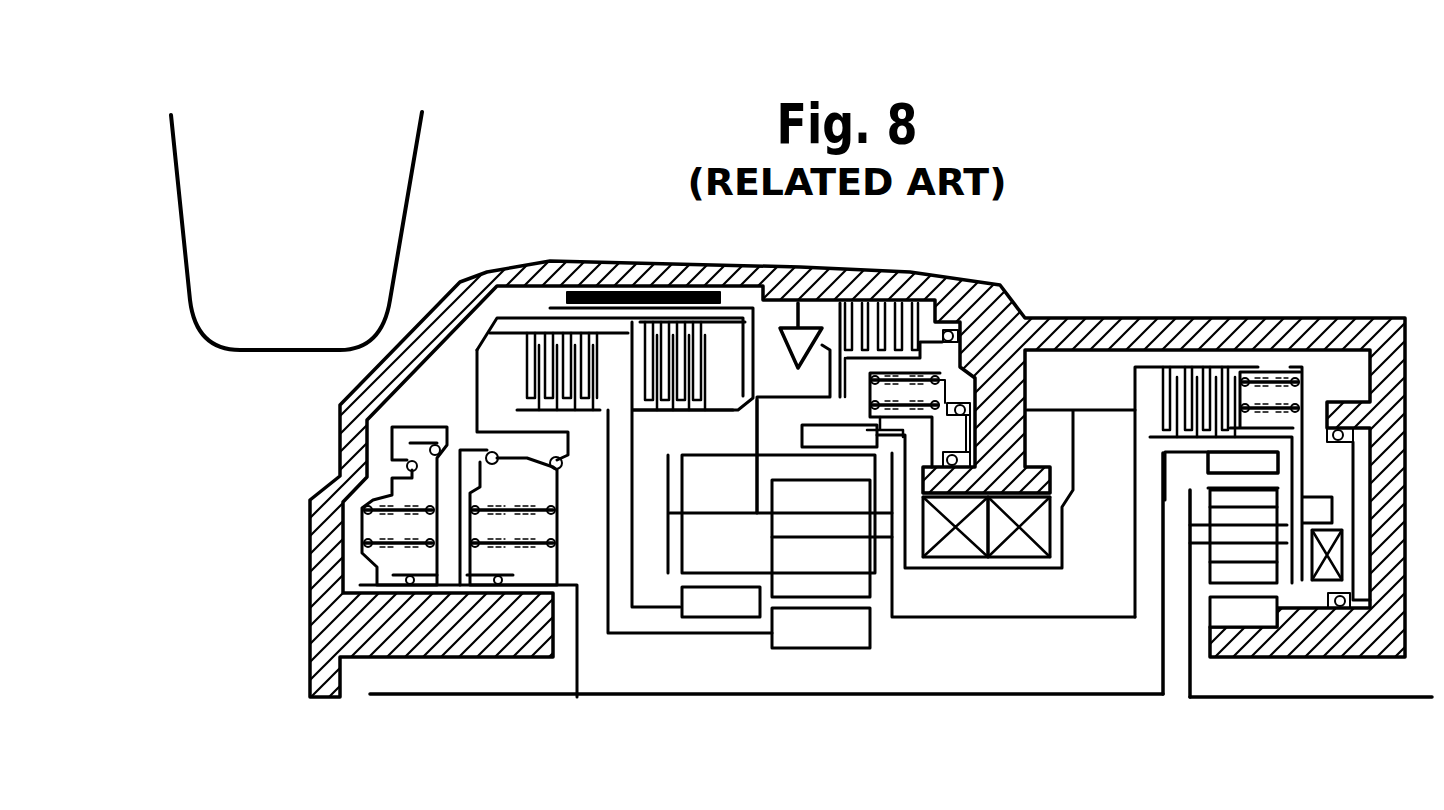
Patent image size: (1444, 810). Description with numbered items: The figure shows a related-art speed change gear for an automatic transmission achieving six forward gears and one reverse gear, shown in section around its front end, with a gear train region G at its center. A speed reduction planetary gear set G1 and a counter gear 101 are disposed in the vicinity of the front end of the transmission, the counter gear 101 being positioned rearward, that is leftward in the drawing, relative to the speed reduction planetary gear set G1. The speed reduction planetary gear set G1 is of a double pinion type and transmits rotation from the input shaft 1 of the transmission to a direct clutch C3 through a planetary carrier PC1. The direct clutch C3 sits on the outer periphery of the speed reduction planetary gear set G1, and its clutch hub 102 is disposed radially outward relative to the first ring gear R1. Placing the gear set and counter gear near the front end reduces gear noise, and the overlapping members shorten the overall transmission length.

The input shaft 1 is at (1298, 697).
The counter gear 101 is at (1057, 412).
The clutch hub 102 is at (1228, 430).
The direct clutch C3 is at (1199, 367).
The first ring gear R1 is at (1208, 467).
The planetary carrier PC1 is at (1203, 566).
The speed reduction planetary gear set G1 is at (1164, 566).
The planetary gear unit G is at (737, 658).